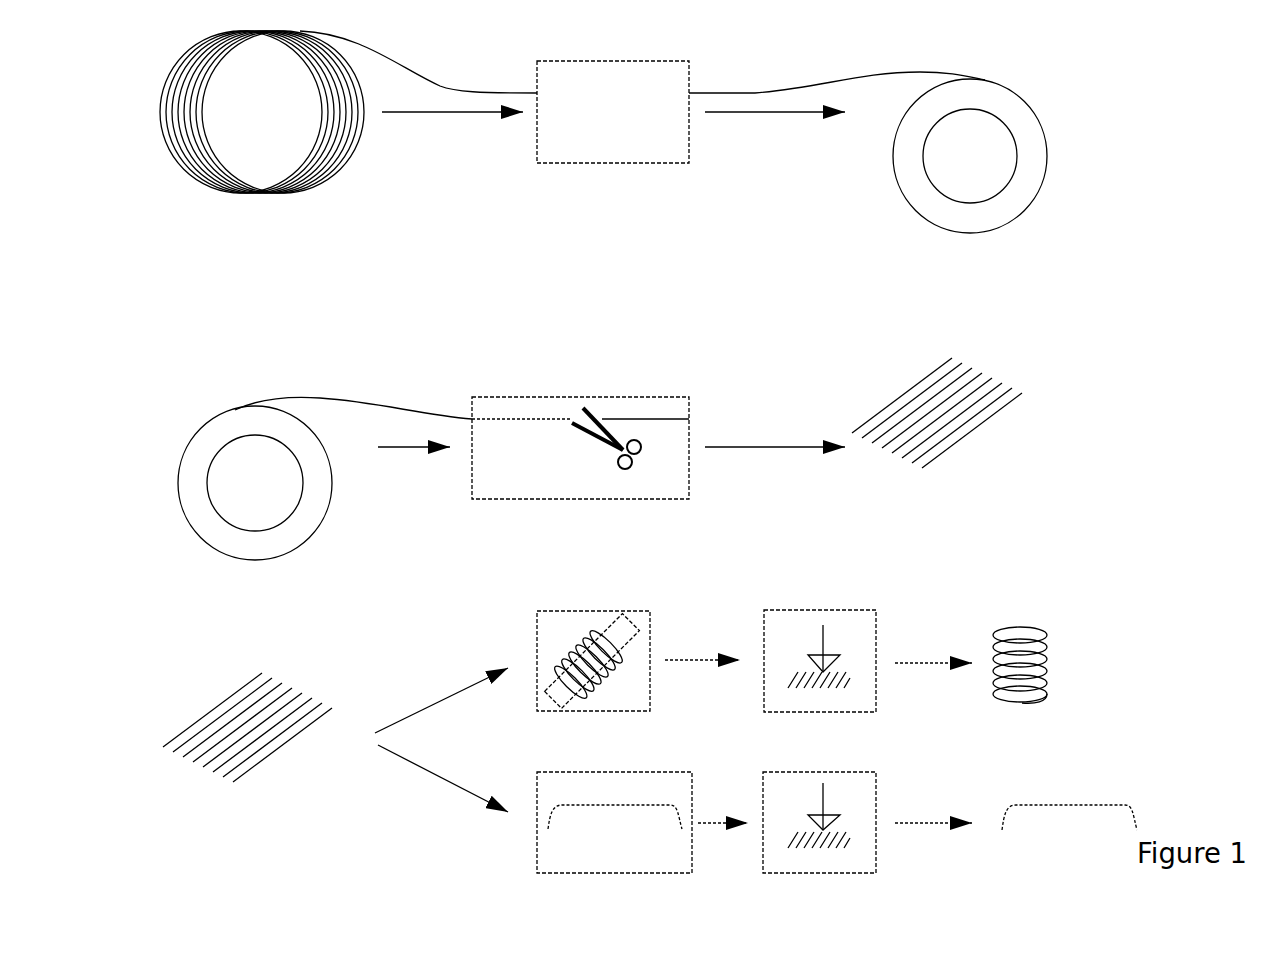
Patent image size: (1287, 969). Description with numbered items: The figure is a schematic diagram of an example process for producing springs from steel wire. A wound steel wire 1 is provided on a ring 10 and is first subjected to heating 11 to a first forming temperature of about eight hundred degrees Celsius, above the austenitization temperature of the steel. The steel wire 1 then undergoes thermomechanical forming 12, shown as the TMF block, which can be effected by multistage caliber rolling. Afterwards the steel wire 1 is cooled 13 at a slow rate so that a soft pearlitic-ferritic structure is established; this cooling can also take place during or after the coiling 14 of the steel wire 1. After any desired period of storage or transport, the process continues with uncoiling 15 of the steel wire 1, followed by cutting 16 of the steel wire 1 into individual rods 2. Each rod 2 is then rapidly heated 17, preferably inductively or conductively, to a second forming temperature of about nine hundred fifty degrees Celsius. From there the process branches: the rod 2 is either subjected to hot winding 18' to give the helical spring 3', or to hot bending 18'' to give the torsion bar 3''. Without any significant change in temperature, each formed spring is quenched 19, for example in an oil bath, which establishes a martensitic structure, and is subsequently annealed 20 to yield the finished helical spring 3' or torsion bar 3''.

The steel wire 1 is at (430, 85).
The rod 2 is at (906, 384).
The helical spring 3' is at (836, 646).
The torsion bar 3'' is at (842, 803).
The ring 10 is at (345, 167).
The heating 11 is at (607, 92).
The thermomechanical forming 12 is at (607, 92).
The cooling 13 is at (655, 61).
The coiling 14 is at (1040, 190).
The uncoiling 15 is at (182, 506).
The cutting to length 16 is at (508, 397).
The heating 17 is at (562, 637).
The hot winding 18' is at (562, 637).
The hot bending 18'' is at (583, 796).
The quenching 19 is at (819, 722).
The annealing 20 is at (855, 610).